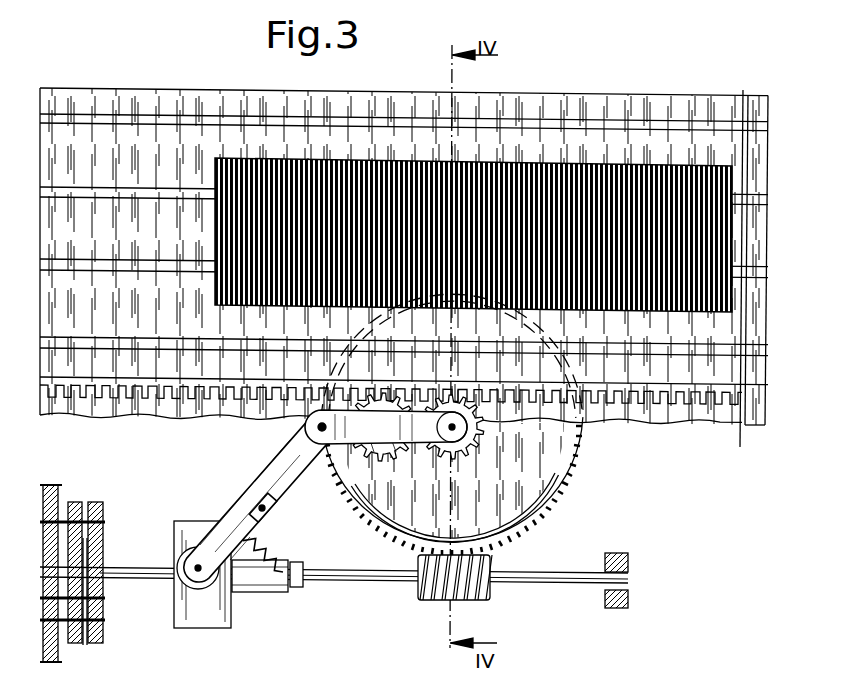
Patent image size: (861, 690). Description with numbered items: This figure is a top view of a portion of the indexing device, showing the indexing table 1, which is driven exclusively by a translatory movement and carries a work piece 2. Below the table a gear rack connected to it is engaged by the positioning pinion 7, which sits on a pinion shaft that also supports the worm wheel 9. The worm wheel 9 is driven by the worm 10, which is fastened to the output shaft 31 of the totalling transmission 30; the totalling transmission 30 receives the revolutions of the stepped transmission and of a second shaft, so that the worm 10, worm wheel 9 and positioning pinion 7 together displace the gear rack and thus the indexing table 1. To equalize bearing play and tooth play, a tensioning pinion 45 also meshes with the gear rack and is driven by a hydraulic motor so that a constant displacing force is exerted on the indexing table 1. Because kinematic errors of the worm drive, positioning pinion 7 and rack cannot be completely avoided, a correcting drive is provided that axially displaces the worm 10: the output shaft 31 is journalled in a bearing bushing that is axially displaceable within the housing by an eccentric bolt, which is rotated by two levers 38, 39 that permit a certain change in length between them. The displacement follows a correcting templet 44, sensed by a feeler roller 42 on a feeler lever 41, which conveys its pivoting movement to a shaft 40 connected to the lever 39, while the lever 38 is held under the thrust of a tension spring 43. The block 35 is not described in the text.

The indexing table 1 is at (757, 140).
The work piece 2 is at (663, 166).
The positioning pinion 7 is at (467, 458).
The worm wheel 9 is at (540, 497).
The worm 10 is at (485, 595).
The totalling transmission 30 is at (45, 590).
The output shaft 31 is at (135, 578).
The bearing block 35 is at (196, 628).
The lever 38 is at (228, 523).
The lever 39 is at (285, 468).
The shaft 40 is at (316, 428).
The feeler lever 41 is at (343, 462).
The feeler roller 42 is at (468, 432).
The tension spring 43 is at (267, 556).
The correcting templet 44 is at (651, 415).
The tensioning pinion 45 is at (397, 463).